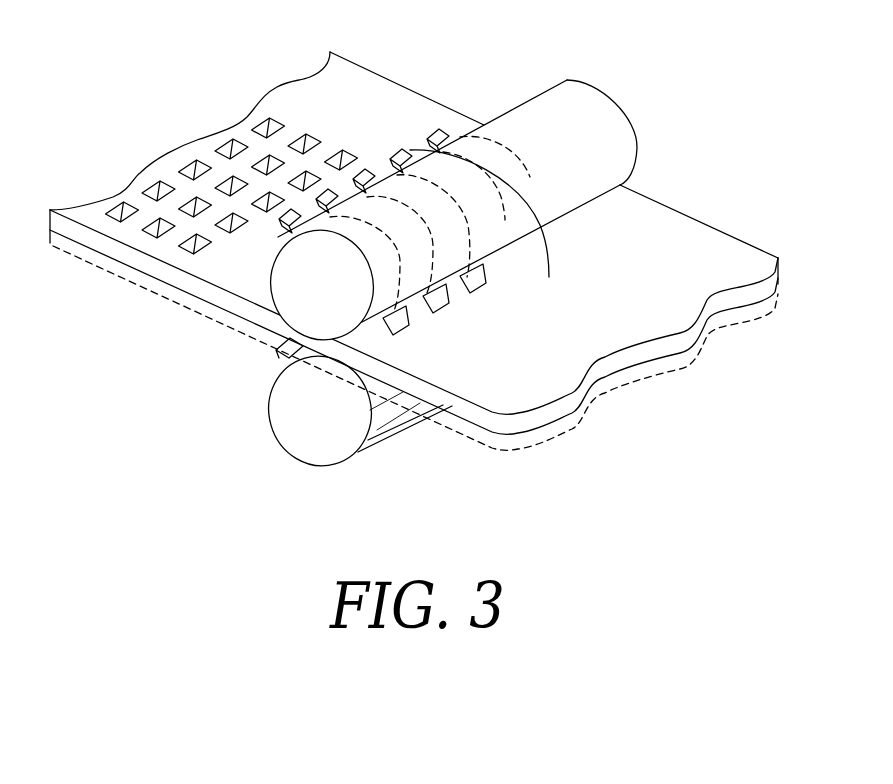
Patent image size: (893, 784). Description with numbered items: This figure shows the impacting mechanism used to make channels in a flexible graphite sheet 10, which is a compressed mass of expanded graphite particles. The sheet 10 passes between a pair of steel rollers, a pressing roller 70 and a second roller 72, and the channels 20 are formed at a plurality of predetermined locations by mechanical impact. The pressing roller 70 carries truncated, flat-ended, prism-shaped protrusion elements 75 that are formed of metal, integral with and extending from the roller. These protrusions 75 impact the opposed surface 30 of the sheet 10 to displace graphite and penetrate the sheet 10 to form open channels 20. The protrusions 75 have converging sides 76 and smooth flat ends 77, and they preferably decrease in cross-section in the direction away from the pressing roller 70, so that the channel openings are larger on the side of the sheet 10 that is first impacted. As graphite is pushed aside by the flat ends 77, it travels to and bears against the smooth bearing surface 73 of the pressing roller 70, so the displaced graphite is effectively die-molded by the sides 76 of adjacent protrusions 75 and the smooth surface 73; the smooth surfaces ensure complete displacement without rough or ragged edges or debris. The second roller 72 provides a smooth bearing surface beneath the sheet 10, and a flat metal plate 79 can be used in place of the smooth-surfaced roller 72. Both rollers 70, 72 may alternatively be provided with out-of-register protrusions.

The flexible graphite sheet 10 is at (722, 228).
The channels 20 is at (190, 173).
The opposed surface 30 is at (397, 107).
The pressing roller 70 is at (578, 97).
The roller 72 is at (300, 407).
The smooth bearing surface 73 is at (393, 173).
The protrusion elements 75 is at (440, 487).
The converging sides 76 is at (440, 130).
The flat ends 77 is at (283, 222).
The flat metal plate 79 is at (617, 372).